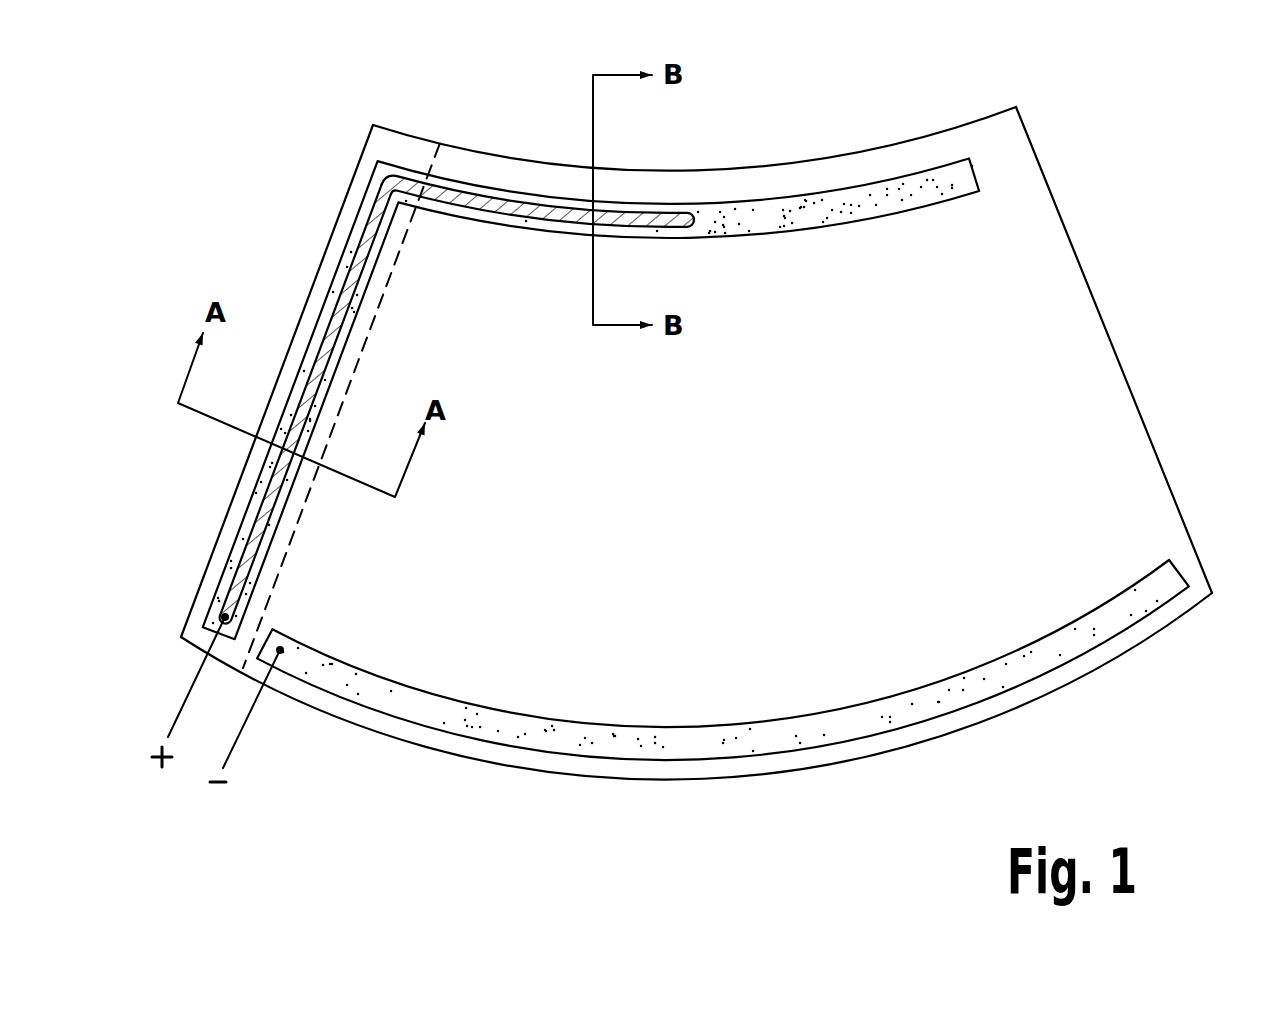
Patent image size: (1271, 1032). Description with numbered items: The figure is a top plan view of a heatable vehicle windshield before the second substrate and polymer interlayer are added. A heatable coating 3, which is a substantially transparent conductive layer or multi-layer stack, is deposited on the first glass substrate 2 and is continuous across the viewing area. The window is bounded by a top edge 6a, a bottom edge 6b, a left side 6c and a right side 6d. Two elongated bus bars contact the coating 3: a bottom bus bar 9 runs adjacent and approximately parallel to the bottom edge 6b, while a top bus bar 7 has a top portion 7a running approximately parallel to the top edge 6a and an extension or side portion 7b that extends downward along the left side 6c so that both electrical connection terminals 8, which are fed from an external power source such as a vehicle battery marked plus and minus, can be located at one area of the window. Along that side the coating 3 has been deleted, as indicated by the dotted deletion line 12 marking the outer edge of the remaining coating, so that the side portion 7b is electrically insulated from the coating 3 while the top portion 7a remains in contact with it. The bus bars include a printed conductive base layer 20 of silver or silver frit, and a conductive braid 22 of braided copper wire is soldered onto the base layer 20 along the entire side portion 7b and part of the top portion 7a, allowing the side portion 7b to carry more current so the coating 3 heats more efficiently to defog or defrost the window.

The first glass substrate 2 is at (725, 401).
The heatable coating 3 is at (725, 401).
The top edge 6a is at (902, 143).
The bottom edge 6b is at (933, 740).
The left side 6c is at (327, 250).
The right side 6d is at (1077, 246).
The top bus bar 7 is at (419, 366).
The top portion of bus bar 7a is at (672, 205).
The extension or side portion of bus bar 7b is at (323, 303).
The electrical connection terminals 8 is at (247, 809).
The bottom bus bar 9 is at (761, 760).
The deletion line 12 is at (360, 368).
The conductive base layer 20 is at (936, 188).
The conductive braid 22 is at (493, 224).